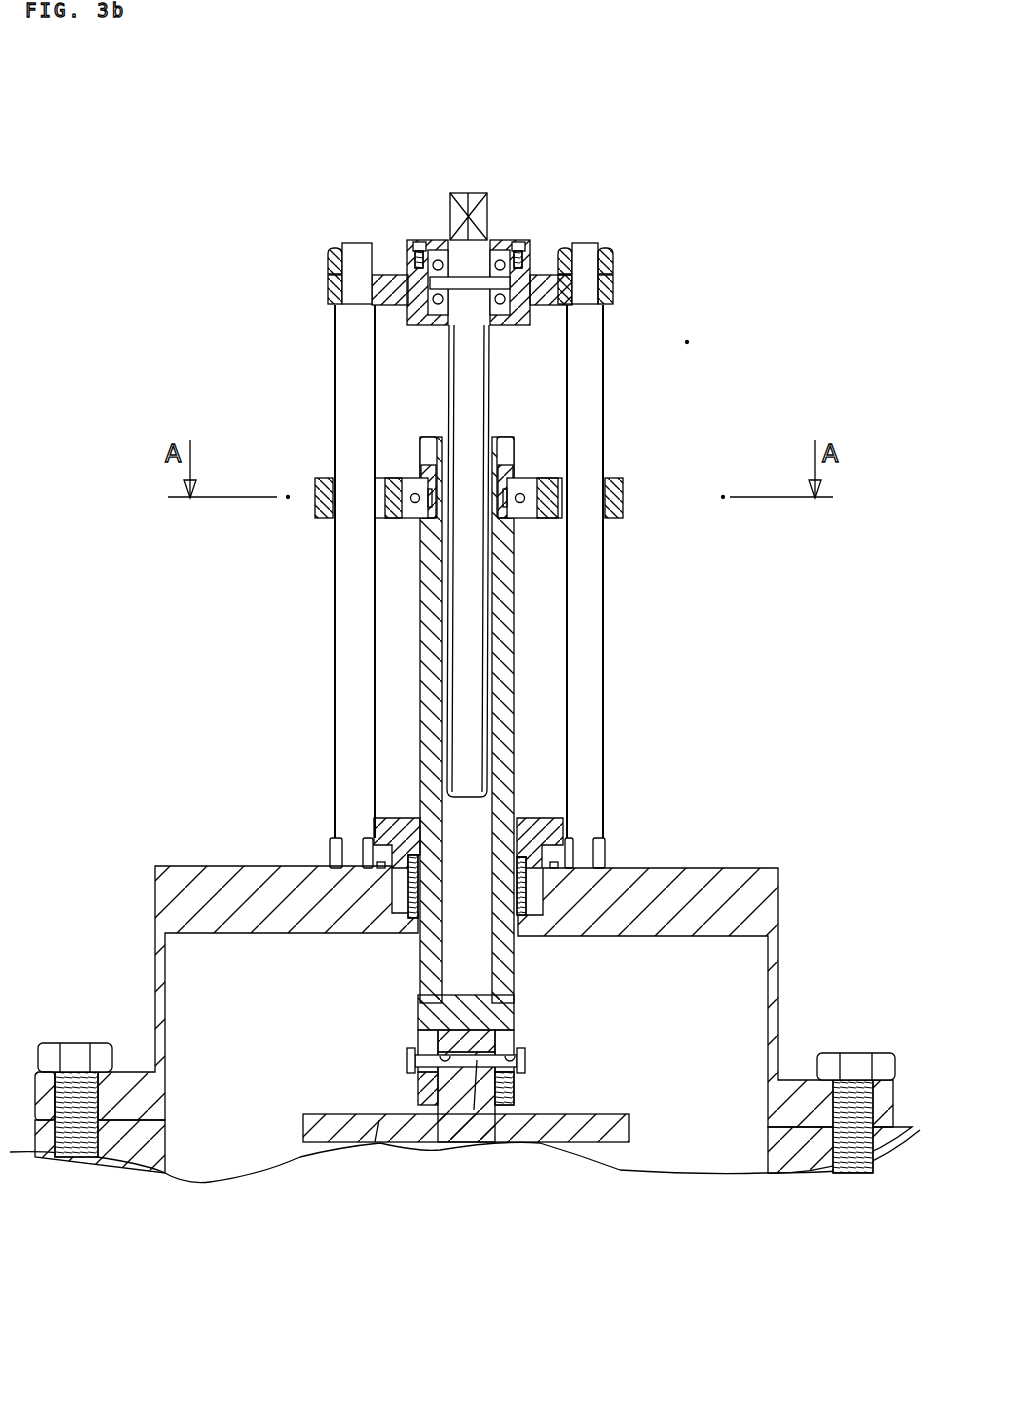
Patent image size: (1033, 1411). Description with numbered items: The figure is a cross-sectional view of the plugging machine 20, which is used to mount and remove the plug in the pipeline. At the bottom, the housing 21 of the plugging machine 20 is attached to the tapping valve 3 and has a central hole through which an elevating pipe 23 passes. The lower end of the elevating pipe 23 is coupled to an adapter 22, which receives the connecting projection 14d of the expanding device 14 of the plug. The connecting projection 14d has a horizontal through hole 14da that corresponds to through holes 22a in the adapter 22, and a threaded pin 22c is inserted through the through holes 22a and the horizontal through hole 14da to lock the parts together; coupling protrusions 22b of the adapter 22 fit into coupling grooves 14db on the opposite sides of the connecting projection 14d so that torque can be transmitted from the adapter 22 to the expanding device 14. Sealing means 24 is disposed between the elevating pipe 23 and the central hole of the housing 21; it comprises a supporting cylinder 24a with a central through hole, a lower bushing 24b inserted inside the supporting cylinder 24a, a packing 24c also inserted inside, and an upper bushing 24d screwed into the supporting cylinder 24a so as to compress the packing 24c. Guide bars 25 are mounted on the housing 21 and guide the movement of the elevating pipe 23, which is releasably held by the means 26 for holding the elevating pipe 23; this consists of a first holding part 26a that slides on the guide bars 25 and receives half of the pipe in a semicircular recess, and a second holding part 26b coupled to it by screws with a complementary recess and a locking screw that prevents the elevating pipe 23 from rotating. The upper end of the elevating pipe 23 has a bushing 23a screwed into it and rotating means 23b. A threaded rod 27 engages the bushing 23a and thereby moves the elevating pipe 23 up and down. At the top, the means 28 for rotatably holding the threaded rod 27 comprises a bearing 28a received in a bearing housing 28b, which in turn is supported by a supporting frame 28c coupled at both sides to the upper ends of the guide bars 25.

The tapping valve 3 is at (888, 1143).
The expanding device 14 is at (603, 1122).
The connecting projection 14d is at (452, 1080).
The horizontal through hole 14da is at (432, 1055).
The coupling grooves 14db is at (375, 1142).
The plugging machine 20 is at (652, 526).
The housing 21 is at (187, 890).
The adapter 22 is at (581, 1019).
The through holes 22a is at (526, 1060).
The coupling protrusions 22b is at (520, 1098).
The threaded pin 22c is at (474, 1110).
The elevating pipe 23 is at (468, 709).
The bushing 23a is at (508, 455).
The rotating means 23b is at (430, 455).
The sealing means 24 is at (466, 805).
The supporting cylinder 24a is at (377, 827).
The lower bushing 24b is at (410, 917).
The packing 24c is at (572, 852).
The upper bushing 24d is at (528, 822).
The guide bars 25 is at (587, 595).
The means for releasably holding the elevating pipe 26 is at (479, 480).
The first holding part 26a is at (316, 497).
The second holding part 26b is at (412, 488).
The threaded rod 27 is at (470, 380).
The means for rotatably holding the threaded rod 28 is at (433, 237).
The bearing 28a is at (436, 259).
The bearing housing 28b is at (417, 282).
The supporting frame 28c is at (398, 280).